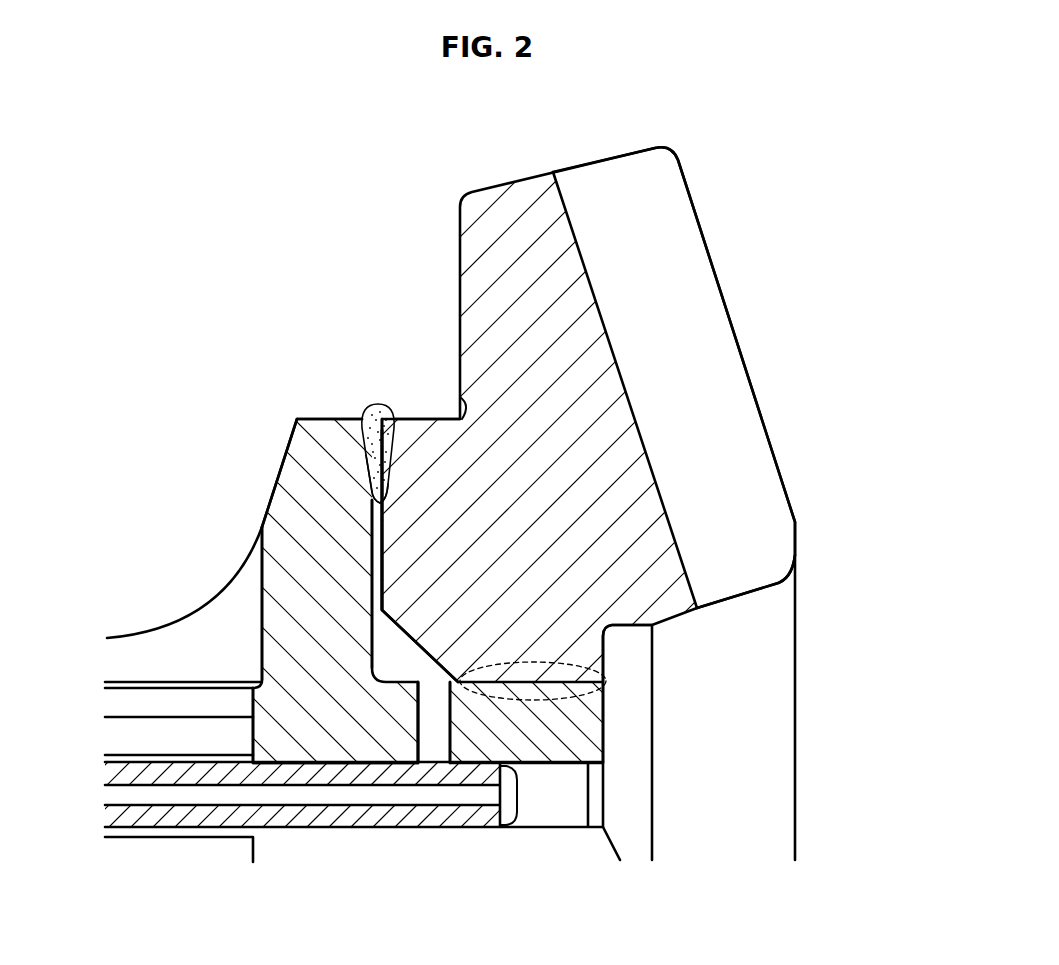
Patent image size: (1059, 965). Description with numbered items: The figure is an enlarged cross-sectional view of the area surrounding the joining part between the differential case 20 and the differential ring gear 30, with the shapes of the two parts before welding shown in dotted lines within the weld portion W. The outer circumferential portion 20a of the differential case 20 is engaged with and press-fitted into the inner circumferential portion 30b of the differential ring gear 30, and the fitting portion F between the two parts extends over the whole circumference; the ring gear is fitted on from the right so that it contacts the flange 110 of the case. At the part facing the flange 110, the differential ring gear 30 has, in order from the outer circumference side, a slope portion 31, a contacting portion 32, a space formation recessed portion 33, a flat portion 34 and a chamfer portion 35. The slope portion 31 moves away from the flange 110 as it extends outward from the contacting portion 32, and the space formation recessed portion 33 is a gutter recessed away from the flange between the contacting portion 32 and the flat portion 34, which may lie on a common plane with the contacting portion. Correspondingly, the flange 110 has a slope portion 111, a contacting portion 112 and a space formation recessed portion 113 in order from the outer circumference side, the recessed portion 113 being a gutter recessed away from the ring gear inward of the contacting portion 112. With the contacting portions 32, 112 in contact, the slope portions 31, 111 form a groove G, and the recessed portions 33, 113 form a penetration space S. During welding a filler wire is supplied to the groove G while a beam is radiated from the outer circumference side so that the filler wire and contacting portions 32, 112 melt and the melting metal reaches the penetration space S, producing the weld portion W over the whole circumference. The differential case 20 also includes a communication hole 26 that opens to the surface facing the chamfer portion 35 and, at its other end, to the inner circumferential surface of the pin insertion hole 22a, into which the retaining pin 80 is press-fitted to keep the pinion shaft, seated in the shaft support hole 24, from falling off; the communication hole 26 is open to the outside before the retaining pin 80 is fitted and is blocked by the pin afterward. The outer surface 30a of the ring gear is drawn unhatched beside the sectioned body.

The differential ring gear 30 is at (507, 233).
The outer surface portion 30a is at (627, 210).
The inner circumferential portion 30b is at (607, 723).
The slope portion 31 is at (405, 417).
The contacting portion 32 is at (392, 497).
The space formation recessed portion 33 is at (382, 503).
The flat portion 34 is at (382, 557).
The chamfer portion 35 is at (383, 610).
The flange 110 is at (300, 520).
The slope portion 111 is at (348, 442).
The contacting portion 112 is at (353, 463).
The space formation recessed portion 113 is at (367, 613).
The differential case 20 is at (330, 727).
The outer circumferential portion 20a is at (487, 665).
The pin insertion hole 22a is at (350, 820).
The shaft support hole 24 is at (253, 735).
The communication hole 26 is at (440, 740).
The retaining pin 80 is at (148, 818).
The weld portion W is at (377, 405).
The groove G is at (373, 430).
The penetration space S is at (370, 583).
The fitting portion F is at (595, 675).